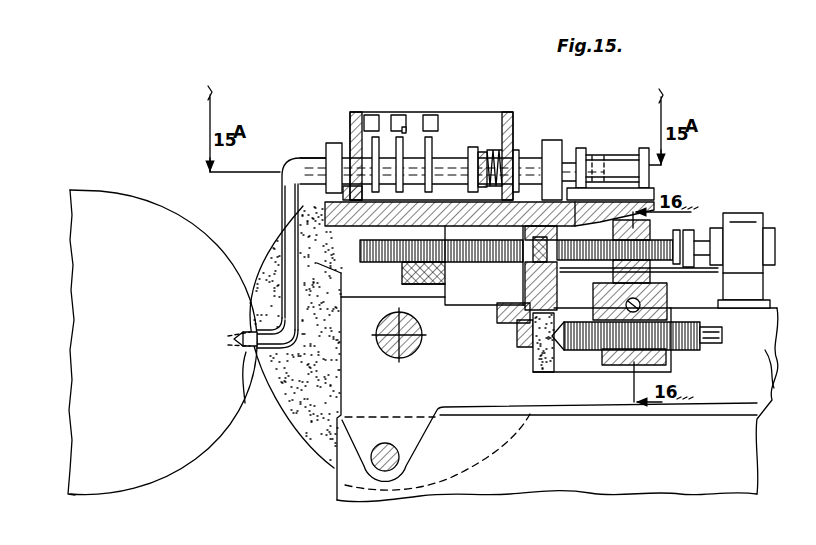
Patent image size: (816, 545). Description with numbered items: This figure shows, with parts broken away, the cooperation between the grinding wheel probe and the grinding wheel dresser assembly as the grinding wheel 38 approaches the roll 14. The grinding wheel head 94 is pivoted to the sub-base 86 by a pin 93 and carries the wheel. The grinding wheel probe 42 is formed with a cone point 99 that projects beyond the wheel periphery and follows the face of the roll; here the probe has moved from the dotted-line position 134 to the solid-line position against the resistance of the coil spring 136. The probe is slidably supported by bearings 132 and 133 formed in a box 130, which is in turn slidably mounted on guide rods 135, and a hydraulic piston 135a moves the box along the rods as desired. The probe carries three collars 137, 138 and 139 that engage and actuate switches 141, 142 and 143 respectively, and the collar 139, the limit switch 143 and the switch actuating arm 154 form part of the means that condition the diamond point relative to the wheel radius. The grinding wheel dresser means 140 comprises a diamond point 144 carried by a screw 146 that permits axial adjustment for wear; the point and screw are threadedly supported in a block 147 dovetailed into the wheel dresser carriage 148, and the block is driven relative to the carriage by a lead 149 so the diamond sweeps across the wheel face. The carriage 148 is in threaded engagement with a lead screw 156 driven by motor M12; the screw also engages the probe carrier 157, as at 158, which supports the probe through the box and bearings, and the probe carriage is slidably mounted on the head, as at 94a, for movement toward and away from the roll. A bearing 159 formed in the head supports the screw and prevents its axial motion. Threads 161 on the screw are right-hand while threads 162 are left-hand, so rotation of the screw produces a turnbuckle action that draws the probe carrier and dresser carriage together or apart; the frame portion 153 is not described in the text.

The roll 14 is at (103, 191).
The grinding wheel 38 is at (300, 430).
The grinding wheel probe 42 is at (281, 199).
The dotted-line position of probe 134 is at (233, 340).
The cone point 99 is at (241, 390).
The guide rods 135 is at (322, 170).
The probe carrier 157 is at (326, 144).
The bearing 132 is at (355, 135).
The box 130 is at (512, 113).
The collar 137 is at (374, 158).
The switch 141 is at (378, 136).
The switch 142 is at (398, 114).
The switch 143 is at (404, 137).
The switch actuating arm 154 is at (409, 132).
The collar 139 is at (439, 135).
The coil spring 136 is at (489, 156).
The bearing 133 is at (493, 146).
The hydraulic piston 135a is at (604, 160).
The slide mounting 94a is at (318, 226).
The frame body 153 is at (385, 351).
The pin 93 is at (393, 458).
The sub-base 86 is at (721, 476).
The grinding wheel head 94 is at (779, 379).
The left-hand threads 162 is at (452, 290).
The collar 138 is at (395, 275).
The threaded engagement 158 is at (405, 286).
The bearing 159 is at (527, 272).
The wheel dresser carriage 148 is at (636, 285).
The lead 149 is at (621, 298).
The lead screw 156 is at (498, 264).
The right-hand threads 161 is at (603, 240).
The motor M12 is at (767, 230).
The diamond point 144 is at (546, 374).
The screw 146 is at (676, 340).
The block 147 is at (621, 364).
The grinding wheel dresser means 140 is at (591, 362).